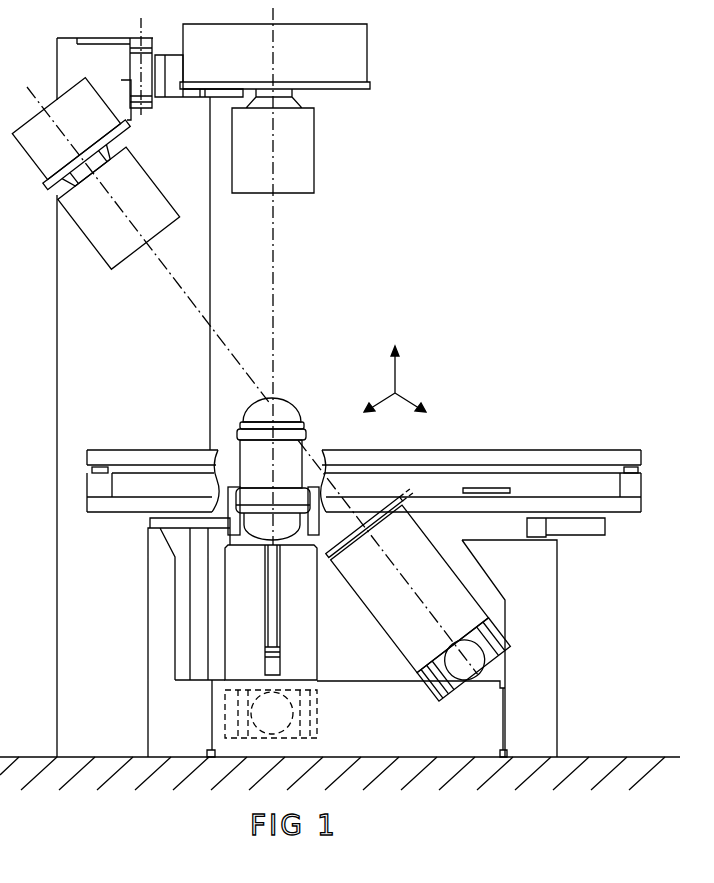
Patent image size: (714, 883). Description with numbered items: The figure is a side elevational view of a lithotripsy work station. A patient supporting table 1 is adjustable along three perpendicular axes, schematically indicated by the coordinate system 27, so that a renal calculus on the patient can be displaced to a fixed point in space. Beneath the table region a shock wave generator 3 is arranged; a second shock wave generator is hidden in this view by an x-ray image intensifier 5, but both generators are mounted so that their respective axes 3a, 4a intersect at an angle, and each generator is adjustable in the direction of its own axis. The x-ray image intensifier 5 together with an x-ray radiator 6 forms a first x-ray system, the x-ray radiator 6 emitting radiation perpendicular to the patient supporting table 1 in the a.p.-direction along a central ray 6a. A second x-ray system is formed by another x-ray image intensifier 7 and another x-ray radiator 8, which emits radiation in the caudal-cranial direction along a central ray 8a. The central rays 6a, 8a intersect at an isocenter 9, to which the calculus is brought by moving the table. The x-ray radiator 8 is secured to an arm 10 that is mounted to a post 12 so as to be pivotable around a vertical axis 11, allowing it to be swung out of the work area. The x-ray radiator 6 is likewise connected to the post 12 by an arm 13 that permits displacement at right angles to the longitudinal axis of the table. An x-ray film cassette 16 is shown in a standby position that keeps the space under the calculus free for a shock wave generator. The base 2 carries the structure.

The patient supporting table 1 is at (439, 453).
The base 2 is at (558, 609).
The shock wave generator 3 is at (289, 455).
The axis of shock wave generator 3a is at (272, 373).
The axis of shock wave generator 4a is at (374, 510).
The x-ray image intensifier 5 is at (312, 608).
The x-ray radiator 6 is at (325, 73).
The central ray 6a is at (275, 221).
The x-ray image intensifier 7 is at (385, 617).
The x-ray radiator 8 is at (39, 153).
The central ray 8a is at (165, 270).
The isocenter 9 is at (286, 400).
The arm 10 is at (133, 68).
The vertical axis 11 is at (141, 37).
The post 12 is at (70, 344).
The arm 13 is at (186, 99).
The x-ray film cassette 16 is at (551, 478).
The coordinate system 27 is at (398, 378).